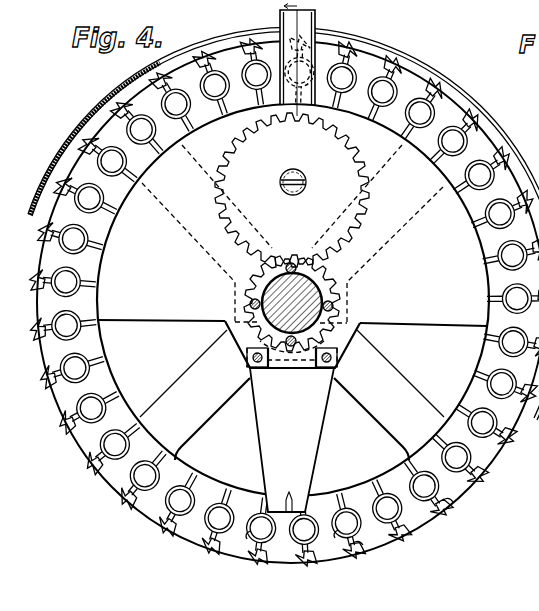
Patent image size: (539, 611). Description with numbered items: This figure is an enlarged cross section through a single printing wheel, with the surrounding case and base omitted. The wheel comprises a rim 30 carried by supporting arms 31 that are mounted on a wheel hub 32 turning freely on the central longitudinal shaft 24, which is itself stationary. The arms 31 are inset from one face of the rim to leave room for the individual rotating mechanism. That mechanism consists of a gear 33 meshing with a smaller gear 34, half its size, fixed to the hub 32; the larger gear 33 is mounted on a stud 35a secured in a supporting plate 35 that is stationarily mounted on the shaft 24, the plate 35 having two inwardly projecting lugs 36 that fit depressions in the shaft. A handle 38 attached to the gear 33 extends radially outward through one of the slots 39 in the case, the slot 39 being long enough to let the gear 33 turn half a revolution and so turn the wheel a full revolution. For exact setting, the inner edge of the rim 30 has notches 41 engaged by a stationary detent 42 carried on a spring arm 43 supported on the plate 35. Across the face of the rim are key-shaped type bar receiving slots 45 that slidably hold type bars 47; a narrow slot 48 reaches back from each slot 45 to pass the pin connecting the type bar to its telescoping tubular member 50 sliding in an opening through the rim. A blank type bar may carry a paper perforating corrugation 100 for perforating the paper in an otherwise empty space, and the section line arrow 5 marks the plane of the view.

The section arrow 5 is at (295, 7).
The central longitudinal shaft 24 is at (286, 309).
The rim 30 is at (111, 376).
The supporting arms 31 is at (173, 386).
The wheel hub 32 is at (352, 299).
The gear 33 is at (292, 190).
The smaller gear 34 is at (333, 281).
The supporting plate 35 is at (292, 290).
The stud 35a is at (306, 177).
The inwardly projecting lugs 36 is at (234, 290).
The handle 38 is at (317, 19).
The slots 39 is at (421, 61).
The notches 41 is at (228, 492).
The detent 42 is at (304, 499).
The spring arm 43 is at (292, 416).
The type bar receiving slots 45 is at (172, 537).
The type bars 47 is at (124, 512).
The narrow slot 48 is at (353, 544).
The members 50 is at (241, 560).
The paper perforating corrugation 100 is at (196, 30).